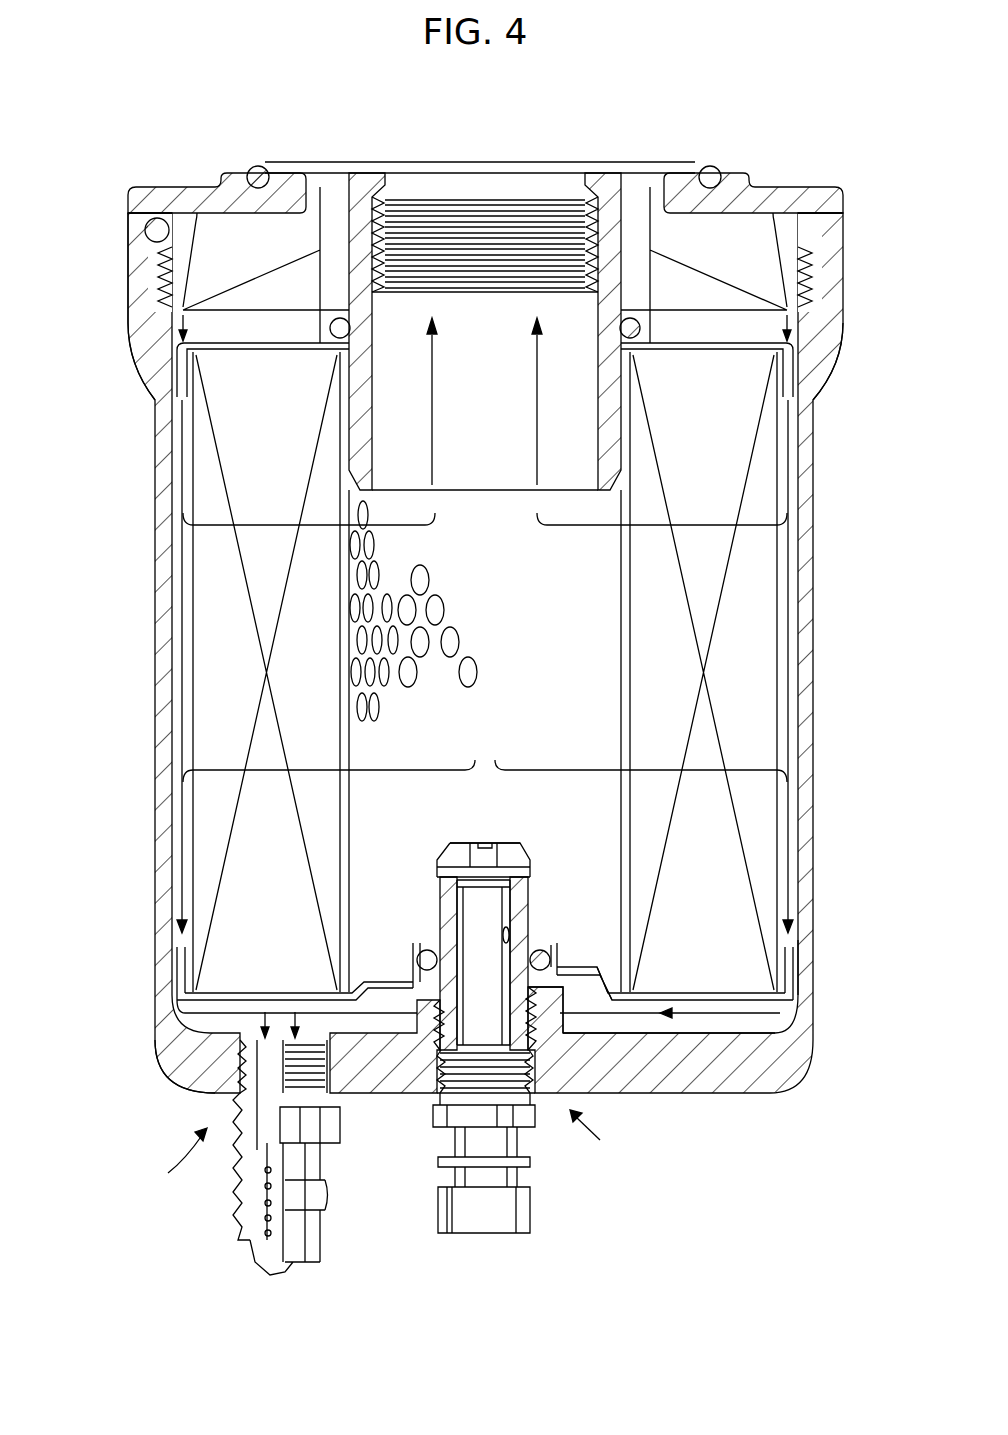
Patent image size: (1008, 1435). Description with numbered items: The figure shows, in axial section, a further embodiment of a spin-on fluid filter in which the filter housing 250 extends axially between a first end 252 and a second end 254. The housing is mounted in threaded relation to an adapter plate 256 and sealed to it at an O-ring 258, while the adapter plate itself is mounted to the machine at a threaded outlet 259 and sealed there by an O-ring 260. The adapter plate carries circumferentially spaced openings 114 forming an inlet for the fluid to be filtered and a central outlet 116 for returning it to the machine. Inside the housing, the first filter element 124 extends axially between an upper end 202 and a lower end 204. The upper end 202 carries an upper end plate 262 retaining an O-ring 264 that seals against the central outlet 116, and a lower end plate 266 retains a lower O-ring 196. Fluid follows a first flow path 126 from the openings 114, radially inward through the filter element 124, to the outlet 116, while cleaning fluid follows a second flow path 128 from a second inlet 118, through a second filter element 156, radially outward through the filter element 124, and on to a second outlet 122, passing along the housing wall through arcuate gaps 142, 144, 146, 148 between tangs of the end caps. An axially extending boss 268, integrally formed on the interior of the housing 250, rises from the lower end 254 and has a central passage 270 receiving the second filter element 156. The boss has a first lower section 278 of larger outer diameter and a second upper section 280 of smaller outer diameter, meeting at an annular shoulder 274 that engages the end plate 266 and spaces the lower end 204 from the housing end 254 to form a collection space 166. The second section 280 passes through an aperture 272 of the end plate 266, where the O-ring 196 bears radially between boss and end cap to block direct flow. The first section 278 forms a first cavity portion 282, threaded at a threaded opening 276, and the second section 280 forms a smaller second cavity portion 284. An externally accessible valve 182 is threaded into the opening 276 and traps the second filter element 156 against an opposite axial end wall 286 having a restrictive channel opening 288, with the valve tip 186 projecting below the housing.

The openings 114 is at (312, 213).
The outlet 116 is at (373, 337).
The second inlet 118 is at (539, 1103).
The second outlet 122 is at (229, 1151).
The filter element 124 is at (212, 705).
The first flow path 126 is at (435, 513).
The second flow path 128 is at (475, 760).
The arcuate gap 142 is at (808, 375).
The arcuate gap 144 is at (148, 368).
The arcuate gap 146 is at (803, 963).
The arcuate gap 148 is at (173, 970).
The second filter element 156 is at (502, 907).
The collection space 166 is at (670, 1030).
The valve 182 is at (530, 1197).
The drain valve tip 186 is at (320, 1248).
The lower O-ring 196 is at (560, 965).
The upper end 202 is at (233, 357).
The lower end 204 is at (232, 988).
The filter housing 250 is at (157, 487).
The first end 252 is at (127, 232).
The second end 254 is at (180, 1082).
The adapter plate 256 is at (168, 186).
The O-ring 258 is at (148, 238).
The threaded outlet 259 is at (400, 200).
The O-ring 260 is at (250, 170).
The upper end plate 262 is at (675, 341).
The O-ring 264 is at (631, 316).
The lower end plate 266 is at (768, 988).
The boss 268 is at (627, 987).
The passage 270 is at (437, 1005).
The aperture 272 is at (548, 967).
The annular shoulder 274 is at (417, 949).
The threaded opening 276 is at (432, 1095).
The first lower section 278 is at (436, 996).
The second upper section 280 is at (437, 883).
The first cavity portion 282 is at (543, 995).
The second cavity portion 284 is at (509, 940).
The end wall 286 is at (527, 866).
The restrictive channel opening 288 is at (492, 843).